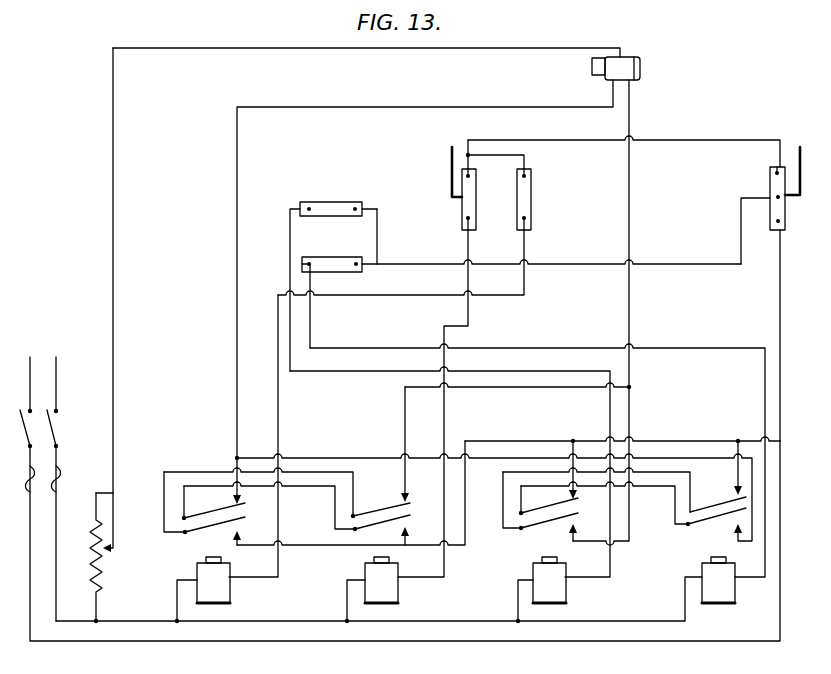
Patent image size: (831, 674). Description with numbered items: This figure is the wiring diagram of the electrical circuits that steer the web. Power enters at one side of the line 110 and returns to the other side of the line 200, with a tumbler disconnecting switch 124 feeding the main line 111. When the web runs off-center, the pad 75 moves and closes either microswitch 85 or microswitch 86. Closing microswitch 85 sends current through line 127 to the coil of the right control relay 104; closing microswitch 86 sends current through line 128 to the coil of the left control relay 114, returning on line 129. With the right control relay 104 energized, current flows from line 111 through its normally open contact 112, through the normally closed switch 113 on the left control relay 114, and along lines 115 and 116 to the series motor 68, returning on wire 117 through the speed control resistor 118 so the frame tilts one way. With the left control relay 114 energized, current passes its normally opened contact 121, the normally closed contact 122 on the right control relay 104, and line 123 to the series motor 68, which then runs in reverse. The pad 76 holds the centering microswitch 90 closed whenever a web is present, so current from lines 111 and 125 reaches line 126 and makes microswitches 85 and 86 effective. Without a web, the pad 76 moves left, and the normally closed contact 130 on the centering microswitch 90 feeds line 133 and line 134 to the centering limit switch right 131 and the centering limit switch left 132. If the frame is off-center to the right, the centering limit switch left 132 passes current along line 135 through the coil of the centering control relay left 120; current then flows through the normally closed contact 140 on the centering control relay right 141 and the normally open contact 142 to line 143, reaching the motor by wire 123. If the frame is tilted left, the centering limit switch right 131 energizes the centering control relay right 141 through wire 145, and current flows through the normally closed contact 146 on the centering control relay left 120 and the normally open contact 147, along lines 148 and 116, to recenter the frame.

The wire 117 is at (396, 48).
The series motor 68 is at (638, 57).
The line 116 is at (632, 109).
The line 123 is at (237, 340).
The line 126 is at (707, 140).
The pad 75 is at (452, 147).
The pad 76 is at (800, 147).
The microswitch 86 is at (470, 208).
The microswitch 85 is at (531, 206).
The centering microswitch 90 is at (770, 173).
The normally closed contact 130 is at (768, 231).
The line 125 is at (780, 327).
The centering limit switch right 131 is at (321, 204).
The centering limit switch left 132 is at (320, 266).
The line 134 is at (378, 237).
The line 133 is at (660, 264).
The line 127 is at (396, 296).
The line 128 is at (470, 326).
The line 135 is at (537, 348).
The wire 145 is at (350, 371).
The line 148 is at (632, 428).
The line 115 is at (405, 425).
The line 143 is at (538, 458).
The line 111 is at (781, 443).
The line 129 is at (287, 621).
The one side of the line 110 is at (28, 415).
The other side of the line 200 is at (65, 479).
The tumbler disconnecting switch 124 is at (58, 430).
The speed control resistor 118 is at (106, 574).
The normally closed contact 122 is at (240, 502).
The normally open contact 112 is at (240, 538).
The normally closed switch 113 is at (408, 502).
The normally opened contact 121 is at (408, 535).
The normally closed contact 140 is at (574, 500).
The normally open contact 147 is at (574, 532).
The normally closed contact 146 is at (738, 492).
The normally open contact 142 is at (736, 532).
The right control relay 104 is at (229, 594).
The left control relay 114 is at (398, 593).
The centering control relay right 141 is at (566, 594).
The centering control relay left 120 is at (713, 598).